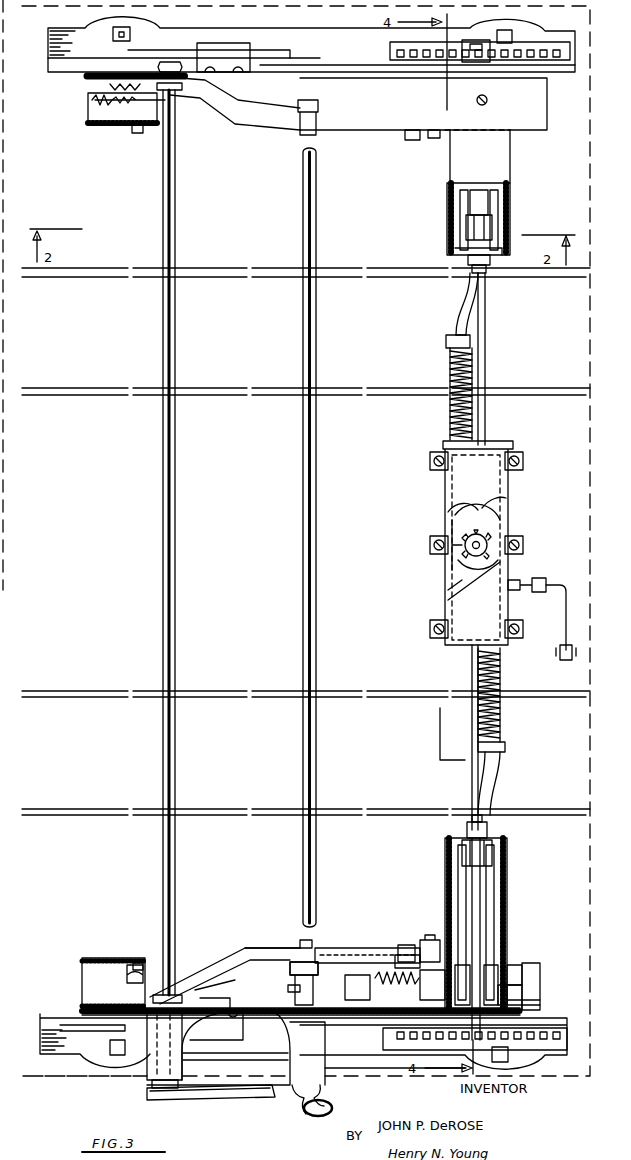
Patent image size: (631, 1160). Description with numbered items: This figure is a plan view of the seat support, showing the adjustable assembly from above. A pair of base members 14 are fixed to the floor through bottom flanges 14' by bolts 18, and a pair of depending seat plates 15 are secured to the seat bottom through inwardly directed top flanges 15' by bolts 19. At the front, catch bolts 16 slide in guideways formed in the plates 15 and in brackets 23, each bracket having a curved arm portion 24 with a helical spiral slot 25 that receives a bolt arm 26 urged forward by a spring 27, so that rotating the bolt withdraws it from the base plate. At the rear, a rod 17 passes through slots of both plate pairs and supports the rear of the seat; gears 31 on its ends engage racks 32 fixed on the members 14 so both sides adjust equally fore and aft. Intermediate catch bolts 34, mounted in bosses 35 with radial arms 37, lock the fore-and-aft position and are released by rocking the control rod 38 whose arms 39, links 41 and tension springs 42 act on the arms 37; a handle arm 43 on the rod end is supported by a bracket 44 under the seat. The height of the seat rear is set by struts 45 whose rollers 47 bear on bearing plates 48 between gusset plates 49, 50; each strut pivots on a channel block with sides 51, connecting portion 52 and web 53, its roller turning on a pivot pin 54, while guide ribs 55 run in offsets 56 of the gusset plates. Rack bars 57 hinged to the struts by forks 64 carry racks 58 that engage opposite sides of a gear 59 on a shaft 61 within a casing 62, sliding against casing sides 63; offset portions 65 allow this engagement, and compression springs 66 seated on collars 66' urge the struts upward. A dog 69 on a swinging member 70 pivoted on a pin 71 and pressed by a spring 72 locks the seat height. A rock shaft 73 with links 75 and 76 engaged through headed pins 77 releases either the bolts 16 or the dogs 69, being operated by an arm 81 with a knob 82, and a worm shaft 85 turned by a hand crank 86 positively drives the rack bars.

The base member 14 is at (301, 54).
The flange 14' is at (303, 567).
The seat member 15 is at (547, 575).
The top edge flange 15' is at (436, 544).
The catch bolt 16 is at (137, 134).
The rod 17 is at (487, 331).
The bolt 18 is at (131, 35).
The bolt 19 is at (487, 104).
The bracket 23 is at (110, 957).
The arm portion 24 is at (150, 958).
The helical spiral slot 25 is at (165, 106).
The bolt arm 26 is at (92, 100).
The spring 27 is at (85, 108).
The gear 31 is at (505, 62).
The rack 32 is at (392, 51).
The catch bolt 34 is at (318, 140).
The boss 35 is at (290, 972).
The bolt arm 37 is at (288, 988).
The control rod 38 is at (162, 852).
The radial arm 39 is at (212, 985).
The link 41 is at (222, 998).
The tension spring 42 is at (108, 88).
The handle arm 43 is at (218, 1090).
The bracket 44 is at (310, 1056).
The strut 45 is at (460, 222).
The roller 47 is at (500, 226).
The bearing plate 48 is at (488, 166).
The gusset plate 49 is at (452, 196).
The gusset plate 50 is at (512, 197).
The block side 51 is at (442, 946).
The connecting portion 52 is at (500, 982).
The channel web 53 is at (525, 1003).
The pivot pin 54 is at (468, 260).
The guide rib 55 is at (522, 995).
The offset 56 is at (524, 988).
The rack bar 57 is at (451, 325).
The rack 58 is at (455, 509).
The gear 59 is at (490, 546).
The shaft 61 is at (450, 532).
The casing 62 is at (500, 440).
The casing side 63 is at (455, 522).
The fork 64 is at (490, 262).
The offset portion 65 is at (462, 308).
The compression spring 66 is at (475, 543).
The seat collar 66' is at (475, 544).
The dog 69 is at (420, 996).
The swinging member 70 is at (402, 954).
The pin 71 is at (407, 944).
The compression spring 72 is at (374, 977).
The rock shaft 73 is at (318, 749).
The link 75 is at (272, 947).
The link 76 is at (360, 948).
The headed pin 77 is at (308, 944).
The arm 81 is at (296, 1100).
The knob 82 is at (318, 1117).
The worm shaft 85 is at (516, 580).
The hand crank 86 is at (564, 604).